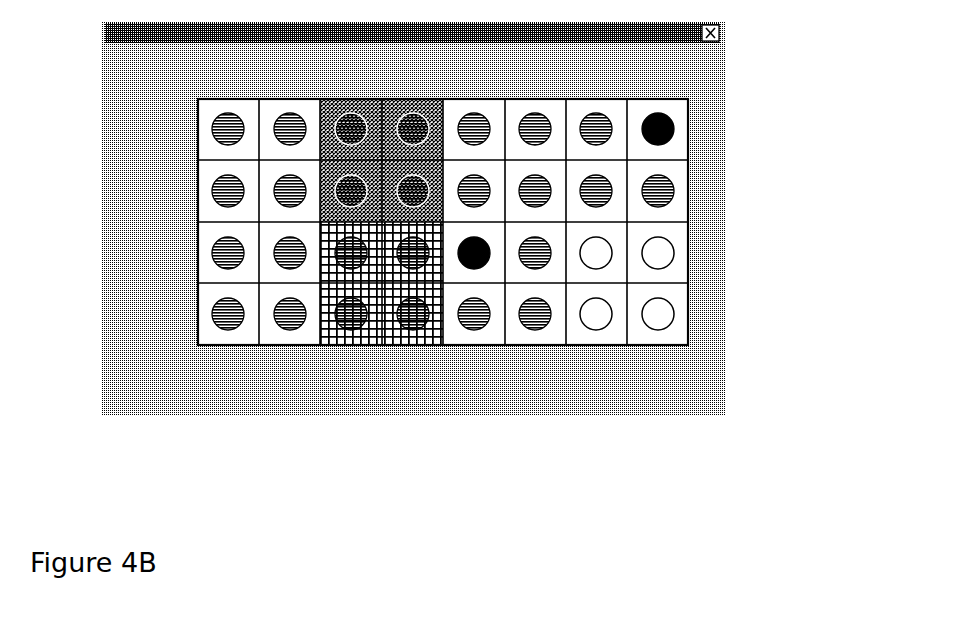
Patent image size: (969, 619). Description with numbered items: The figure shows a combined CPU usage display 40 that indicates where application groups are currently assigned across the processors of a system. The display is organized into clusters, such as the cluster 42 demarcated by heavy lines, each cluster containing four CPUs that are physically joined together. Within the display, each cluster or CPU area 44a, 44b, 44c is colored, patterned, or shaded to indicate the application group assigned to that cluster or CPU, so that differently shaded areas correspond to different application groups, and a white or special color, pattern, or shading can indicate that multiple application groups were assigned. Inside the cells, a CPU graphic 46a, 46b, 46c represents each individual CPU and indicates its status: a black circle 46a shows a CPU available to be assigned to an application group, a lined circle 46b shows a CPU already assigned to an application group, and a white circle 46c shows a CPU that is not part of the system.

The CPU usage display 40 is at (297, 446).
The cluster of four CPUs 42 is at (499, 227).
The cluster or CPU area 44a is at (413, 98).
The cluster or CPU area 44b is at (367, 345).
The cluster or CPU area 44c is at (208, 333).
The CPU graphic 46a is at (677, 128).
The CPU graphic 46b is at (468, 329).
The CPU graphic 46c is at (590, 329).